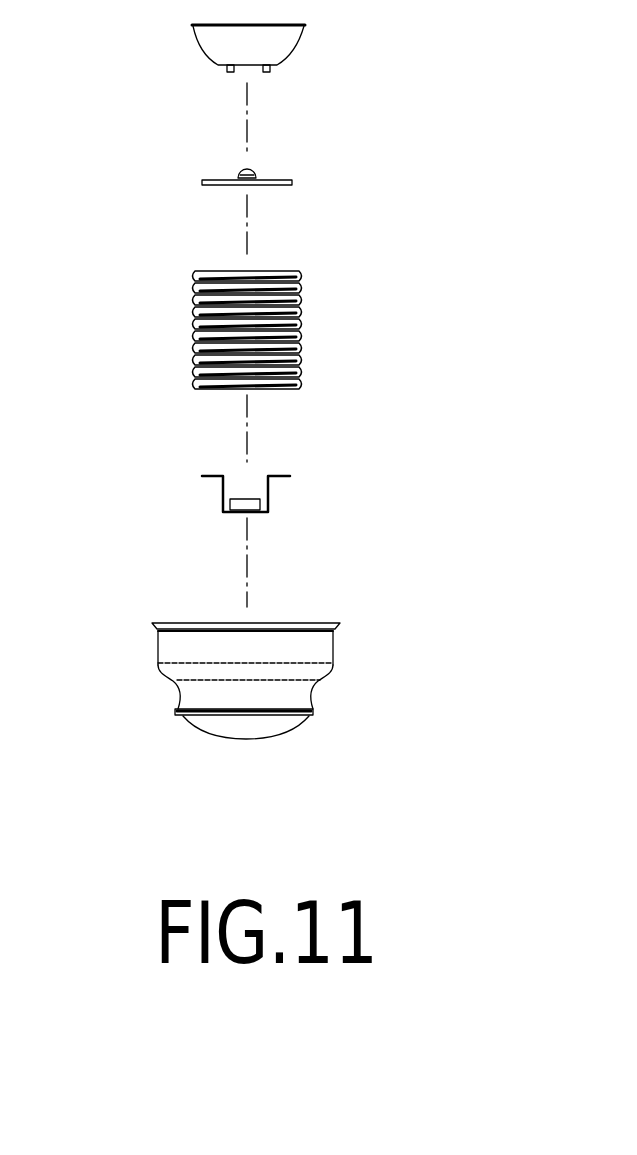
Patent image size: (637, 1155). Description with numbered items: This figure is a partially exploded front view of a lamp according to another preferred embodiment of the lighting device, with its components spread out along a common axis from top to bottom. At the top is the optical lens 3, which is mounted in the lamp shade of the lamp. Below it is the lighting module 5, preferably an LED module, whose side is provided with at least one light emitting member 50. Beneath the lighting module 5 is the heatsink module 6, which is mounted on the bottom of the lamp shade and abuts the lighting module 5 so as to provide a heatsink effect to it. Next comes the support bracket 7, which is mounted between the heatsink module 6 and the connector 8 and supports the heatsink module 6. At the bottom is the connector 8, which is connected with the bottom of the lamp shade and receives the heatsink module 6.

The optical lens 3 is at (282, 39).
The light emitting member 50 is at (247, 168).
The lighting module 5 is at (277, 183).
The heatsink module 6 is at (298, 328).
The support bracket 7 is at (283, 477).
The connector 8 is at (323, 645).